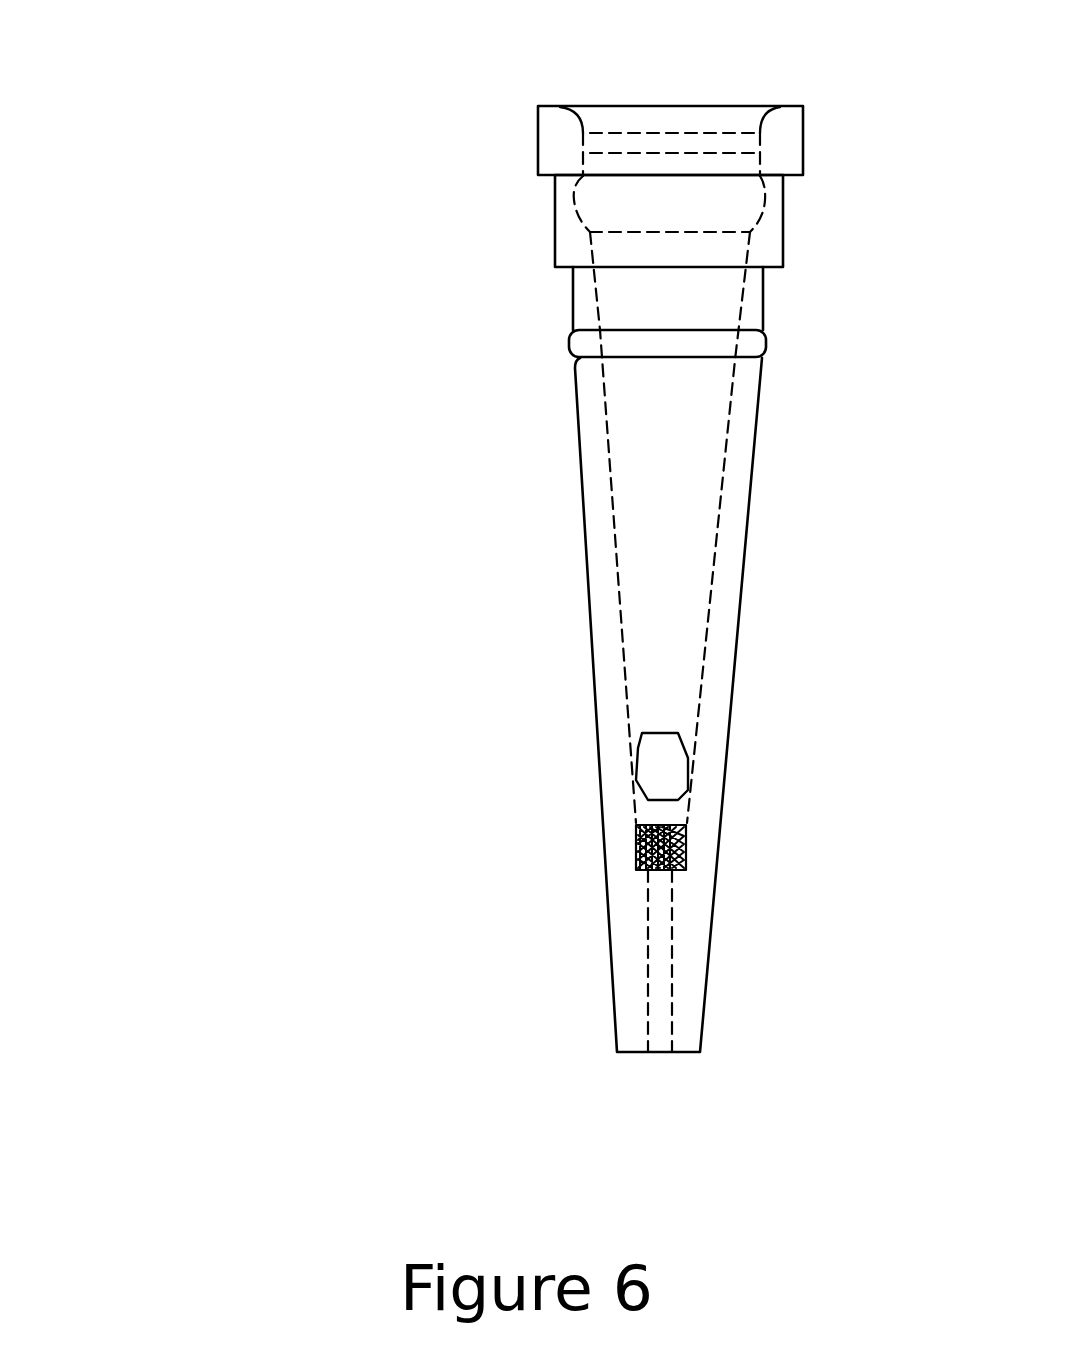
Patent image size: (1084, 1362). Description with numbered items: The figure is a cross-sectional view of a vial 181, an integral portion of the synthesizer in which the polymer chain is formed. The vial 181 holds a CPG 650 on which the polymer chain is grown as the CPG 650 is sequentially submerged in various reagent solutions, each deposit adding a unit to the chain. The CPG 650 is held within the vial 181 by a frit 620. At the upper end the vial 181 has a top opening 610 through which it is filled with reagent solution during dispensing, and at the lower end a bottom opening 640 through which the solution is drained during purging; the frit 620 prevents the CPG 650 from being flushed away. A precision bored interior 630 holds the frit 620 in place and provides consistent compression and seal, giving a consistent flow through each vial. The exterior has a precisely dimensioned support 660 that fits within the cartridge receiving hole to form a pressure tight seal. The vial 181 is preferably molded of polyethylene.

The top opening 610 is at (605, 50).
The vial 181 is at (300, 286).
The support 660 is at (784, 230).
The precision bored interior 630 is at (700, 625).
The CPG 650 is at (677, 763).
The frit 620 is at (687, 845).
The bottom opening 640 is at (659, 1060).